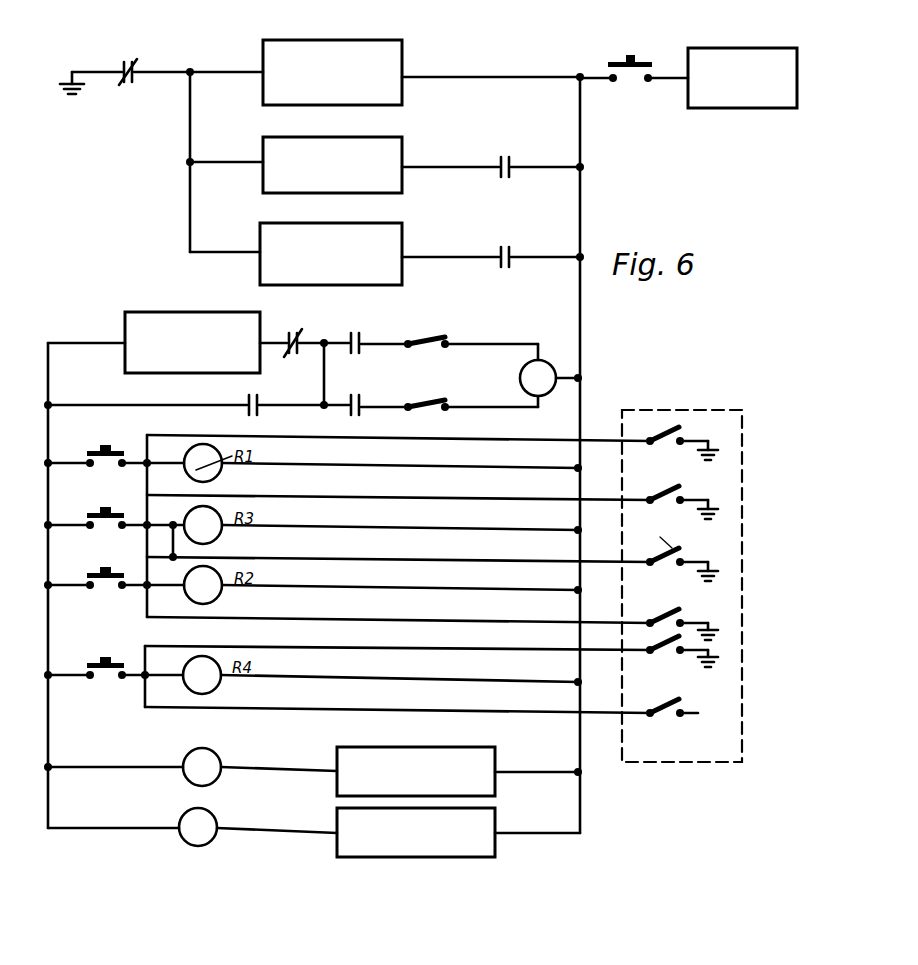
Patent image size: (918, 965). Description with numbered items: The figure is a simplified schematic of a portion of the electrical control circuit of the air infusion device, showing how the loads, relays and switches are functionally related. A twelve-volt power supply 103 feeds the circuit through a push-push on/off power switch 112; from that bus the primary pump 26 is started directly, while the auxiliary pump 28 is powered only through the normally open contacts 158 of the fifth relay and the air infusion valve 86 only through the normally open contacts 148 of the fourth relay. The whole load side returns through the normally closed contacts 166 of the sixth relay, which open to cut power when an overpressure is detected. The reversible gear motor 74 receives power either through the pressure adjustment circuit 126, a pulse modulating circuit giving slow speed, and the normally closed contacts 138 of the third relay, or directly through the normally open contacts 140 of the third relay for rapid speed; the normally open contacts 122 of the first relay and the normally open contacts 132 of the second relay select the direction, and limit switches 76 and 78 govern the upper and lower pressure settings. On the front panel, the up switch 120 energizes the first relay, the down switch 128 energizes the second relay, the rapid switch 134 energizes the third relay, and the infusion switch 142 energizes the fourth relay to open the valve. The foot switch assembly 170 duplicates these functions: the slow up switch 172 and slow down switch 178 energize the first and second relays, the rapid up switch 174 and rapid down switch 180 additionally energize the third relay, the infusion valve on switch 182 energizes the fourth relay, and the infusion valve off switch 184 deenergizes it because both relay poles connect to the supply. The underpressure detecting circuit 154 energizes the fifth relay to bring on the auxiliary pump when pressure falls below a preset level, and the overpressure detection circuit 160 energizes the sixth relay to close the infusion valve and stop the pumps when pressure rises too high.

The normally closed contacts 166 is at (130, 58).
The primary pump 26 is at (350, 42).
The auxiliary pump 28 is at (388, 148).
The air infusion valve 86 is at (345, 226).
The normally open contacts 158 is at (504, 180).
The normally open contacts 148 is at (512, 236).
The power switch 112 is at (632, 70).
The power supply 103 is at (761, 108).
The pressure adjustment circuit 126 is at (130, 355).
The normally closed contacts 138 is at (294, 328).
The normally open contacts 140 is at (252, 394).
The normally open contacts 122 is at (355, 355).
The normally open contacts 132 is at (344, 416).
The limit switch 76 is at (432, 340).
The limit switch 78 is at (426, 404).
The gear motor 74 is at (553, 364).
The up switch 120 is at (100, 450).
The rapid switch 134 is at (118, 518).
The down switch 128 is at (112, 572).
The infusion switch 142 is at (116, 678).
The foot switch assembly 170 is at (742, 455).
The slow up switch 172 is at (676, 433).
The rapid up switch 174 is at (678, 490).
The rapid down switch 180 is at (680, 552).
The slow down switch 178 is at (680, 614).
The infusion valve on switch 182 is at (664, 645).
The infusion valve off switch 184 is at (680, 703).
The underpressure detecting circuit 154 is at (418, 748).
The overpressure detection circuit 160 is at (426, 847).